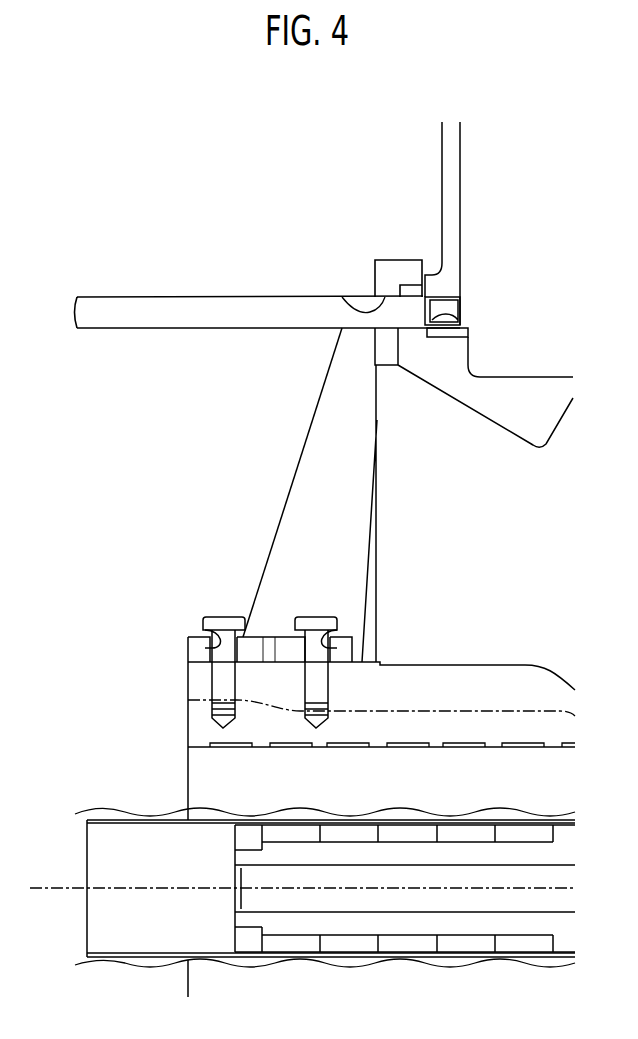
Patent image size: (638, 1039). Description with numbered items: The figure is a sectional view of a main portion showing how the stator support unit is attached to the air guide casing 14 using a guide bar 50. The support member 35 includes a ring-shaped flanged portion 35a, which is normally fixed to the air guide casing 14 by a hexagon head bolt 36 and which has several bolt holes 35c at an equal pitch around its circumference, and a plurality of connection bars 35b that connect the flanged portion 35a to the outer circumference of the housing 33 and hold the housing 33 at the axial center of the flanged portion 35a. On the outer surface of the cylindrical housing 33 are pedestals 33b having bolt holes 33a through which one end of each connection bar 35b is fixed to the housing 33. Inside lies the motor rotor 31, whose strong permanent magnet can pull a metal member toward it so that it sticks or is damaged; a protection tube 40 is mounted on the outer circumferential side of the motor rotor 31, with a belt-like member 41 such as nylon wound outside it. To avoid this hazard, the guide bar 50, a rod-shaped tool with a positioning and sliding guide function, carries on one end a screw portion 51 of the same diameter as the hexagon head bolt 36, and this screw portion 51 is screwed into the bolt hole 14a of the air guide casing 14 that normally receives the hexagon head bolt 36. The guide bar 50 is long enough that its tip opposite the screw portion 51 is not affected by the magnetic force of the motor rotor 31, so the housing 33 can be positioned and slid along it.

The air guide casing 14 is at (507, 415).
The bolt hole 14a is at (432, 320).
The motor rotor 31 is at (352, 927).
The housing 33 is at (343, 802).
The bolt hole 33a is at (205, 632).
The pedestal 33b is at (190, 657).
The support member 35 is at (329, 418).
The flanged portion 35a is at (375, 272).
The connection bar 35b is at (328, 419).
The bolt hole 35c is at (370, 313).
The hexagon head bolt 36 is at (218, 616).
The protection tube 40 is at (87, 905).
The belt-like member 41 is at (110, 967).
The guide bar 50 is at (127, 308).
The screw portion 51 is at (452, 308).